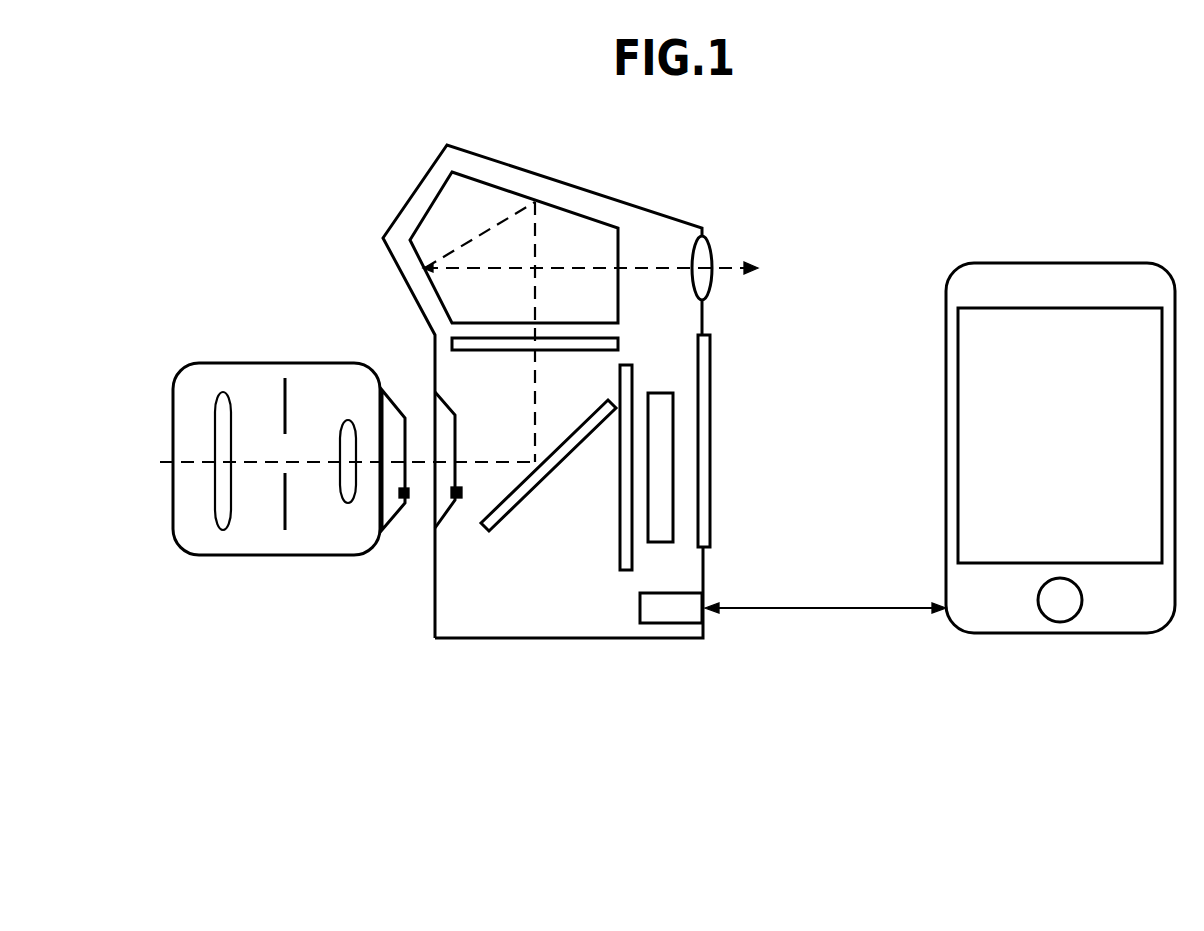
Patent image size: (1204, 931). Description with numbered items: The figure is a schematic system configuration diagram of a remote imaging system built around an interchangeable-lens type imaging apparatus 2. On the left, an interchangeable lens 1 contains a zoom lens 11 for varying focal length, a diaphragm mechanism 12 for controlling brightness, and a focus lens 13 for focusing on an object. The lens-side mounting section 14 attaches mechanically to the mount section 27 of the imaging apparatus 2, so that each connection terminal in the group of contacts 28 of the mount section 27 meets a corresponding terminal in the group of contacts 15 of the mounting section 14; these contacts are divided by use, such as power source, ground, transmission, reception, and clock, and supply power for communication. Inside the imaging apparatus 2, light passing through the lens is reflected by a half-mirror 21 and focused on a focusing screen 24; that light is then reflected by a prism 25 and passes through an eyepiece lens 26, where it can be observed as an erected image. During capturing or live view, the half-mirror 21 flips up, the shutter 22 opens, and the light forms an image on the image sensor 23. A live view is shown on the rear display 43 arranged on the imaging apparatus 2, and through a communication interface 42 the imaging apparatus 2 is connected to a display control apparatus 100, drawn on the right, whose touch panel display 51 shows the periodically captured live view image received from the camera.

The interchangeable lens 1 is at (272, 363).
The imaging apparatus 2 is at (408, 195).
The zoom lens 11 is at (222, 530).
The diaphragm mechanism 12 is at (285, 530).
The focus lens 13 is at (348, 505).
The mounting section 14 is at (405, 418).
The group of contacts 15 is at (405, 500).
The half-mirror 21 is at (482, 527).
The shutter 22 is at (620, 540).
The image sensor 23 is at (666, 542).
The focusing screen 24 is at (618, 343).
The prism 25 is at (618, 302).
The eyepiece lens 26 is at (712, 253).
The mount section 27 is at (447, 406).
The group of contacts 28 is at (462, 500).
The communication interface 42 is at (672, 623).
The rear display 43 is at (712, 495).
The touch panel display 51 is at (1060, 308).
The display control apparatus 100 is at (946, 412).